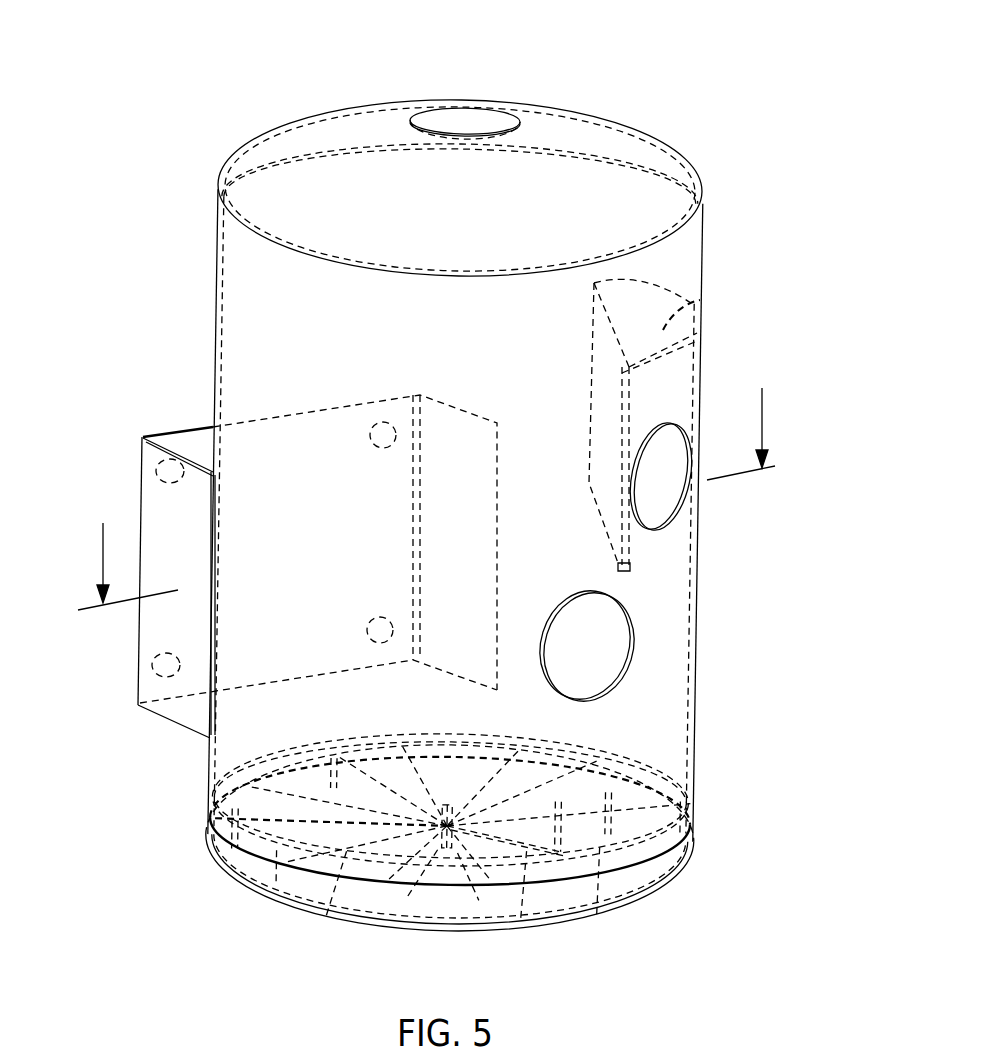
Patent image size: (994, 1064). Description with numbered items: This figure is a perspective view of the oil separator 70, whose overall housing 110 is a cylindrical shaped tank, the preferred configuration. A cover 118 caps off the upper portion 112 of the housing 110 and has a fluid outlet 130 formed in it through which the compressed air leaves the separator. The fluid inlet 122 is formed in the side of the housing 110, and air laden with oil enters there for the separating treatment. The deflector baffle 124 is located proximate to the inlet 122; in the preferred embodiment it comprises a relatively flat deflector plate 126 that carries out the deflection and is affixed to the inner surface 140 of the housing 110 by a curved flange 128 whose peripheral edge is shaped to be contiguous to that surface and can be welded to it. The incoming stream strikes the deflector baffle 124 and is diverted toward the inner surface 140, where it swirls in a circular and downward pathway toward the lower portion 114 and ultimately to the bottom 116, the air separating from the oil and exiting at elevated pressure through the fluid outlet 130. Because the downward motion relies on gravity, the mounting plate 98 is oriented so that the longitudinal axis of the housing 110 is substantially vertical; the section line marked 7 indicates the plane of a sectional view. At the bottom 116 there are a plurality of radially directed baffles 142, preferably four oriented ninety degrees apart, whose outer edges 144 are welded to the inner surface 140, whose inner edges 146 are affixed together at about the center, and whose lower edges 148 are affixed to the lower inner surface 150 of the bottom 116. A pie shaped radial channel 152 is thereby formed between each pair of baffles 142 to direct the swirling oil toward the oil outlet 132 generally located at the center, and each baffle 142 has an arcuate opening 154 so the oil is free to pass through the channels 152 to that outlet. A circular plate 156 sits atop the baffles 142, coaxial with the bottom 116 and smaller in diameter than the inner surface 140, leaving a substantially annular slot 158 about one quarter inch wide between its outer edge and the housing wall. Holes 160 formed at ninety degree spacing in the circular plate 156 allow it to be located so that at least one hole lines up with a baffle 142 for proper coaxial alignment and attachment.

The oil separator 70 is at (722, 672).
The mounting plate 98 is at (138, 472).
The housing 110 is at (711, 567).
The upper portion 112 is at (253, 357).
The lower portion 114 is at (672, 683).
The bottom 116 is at (628, 905).
The cover 118 is at (664, 206).
The fluid inlet 122 is at (670, 495).
The deflector baffle 124 is at (590, 350).
The deflector plate 126 is at (608, 458).
The curved flange 128 is at (690, 300).
The fluid outlet 130 is at (470, 120).
The oil outlet 132 is at (443, 925).
The inner surface 140 is at (226, 292).
The radially directed baffles 142 is at (410, 745).
The outer edges 144 is at (315, 758).
The inner edges 146 is at (505, 750).
The lower edges 148 is at (225, 852).
The lower inner surface 150 is at (287, 905).
The radial channel 152 is at (313, 804).
The arcuate opening 154 is at (395, 920).
The circular plate 156 is at (680, 778).
The annular slot 158 is at (210, 805).
The holes 160 is at (243, 777).
The section line 7 is at (431, 499).